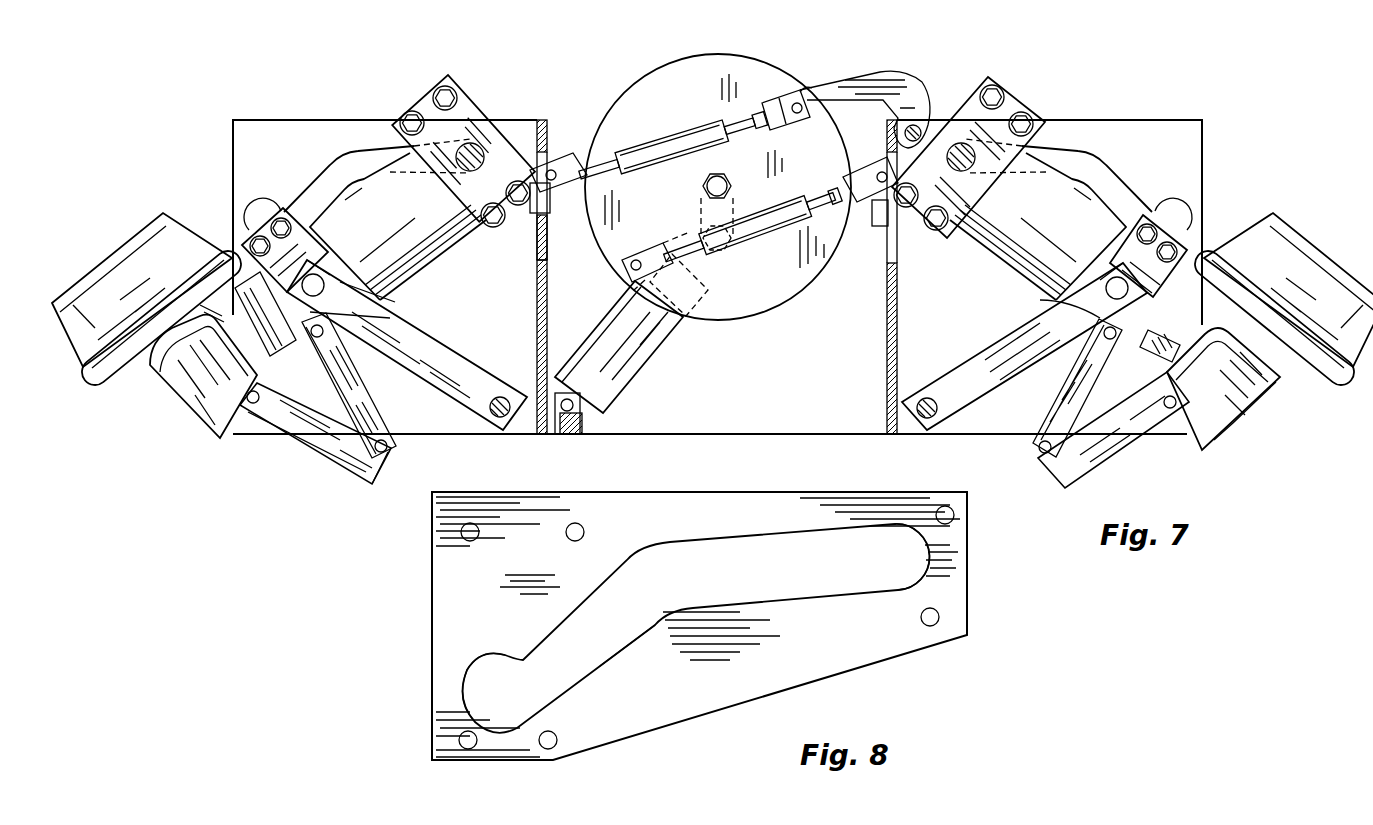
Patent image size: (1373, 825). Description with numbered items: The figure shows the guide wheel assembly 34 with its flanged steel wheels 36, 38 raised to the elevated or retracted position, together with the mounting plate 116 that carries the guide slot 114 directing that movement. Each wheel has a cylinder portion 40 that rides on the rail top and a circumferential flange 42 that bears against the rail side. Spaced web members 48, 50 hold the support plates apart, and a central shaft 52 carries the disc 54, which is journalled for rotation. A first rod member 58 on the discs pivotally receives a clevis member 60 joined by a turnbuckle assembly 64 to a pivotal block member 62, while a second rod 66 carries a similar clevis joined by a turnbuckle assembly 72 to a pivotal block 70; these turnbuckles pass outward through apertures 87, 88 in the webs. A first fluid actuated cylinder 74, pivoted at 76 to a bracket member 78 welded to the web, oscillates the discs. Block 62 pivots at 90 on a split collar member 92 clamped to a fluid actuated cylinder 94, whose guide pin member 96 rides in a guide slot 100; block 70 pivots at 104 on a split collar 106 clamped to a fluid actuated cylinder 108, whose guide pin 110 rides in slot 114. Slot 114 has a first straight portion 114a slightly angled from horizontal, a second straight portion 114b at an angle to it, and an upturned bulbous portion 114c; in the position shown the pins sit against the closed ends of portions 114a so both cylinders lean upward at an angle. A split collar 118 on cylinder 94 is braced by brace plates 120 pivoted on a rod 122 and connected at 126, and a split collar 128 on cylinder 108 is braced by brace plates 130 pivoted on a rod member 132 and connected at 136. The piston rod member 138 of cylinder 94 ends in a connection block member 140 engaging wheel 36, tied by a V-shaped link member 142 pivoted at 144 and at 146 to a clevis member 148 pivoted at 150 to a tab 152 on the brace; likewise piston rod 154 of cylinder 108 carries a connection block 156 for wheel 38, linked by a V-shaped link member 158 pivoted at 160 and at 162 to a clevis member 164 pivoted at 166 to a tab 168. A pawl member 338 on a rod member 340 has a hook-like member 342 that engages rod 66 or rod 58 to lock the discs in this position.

In FIG. 7, the guide wheel assembly 34 is at (1204, 118).
In FIG. 7, the flanged steel wheel 36 is at (1273, 262).
In FIG. 7, the flanged steel wheel 38 is at (146, 252).
In FIG. 7, the cylinder portion 40 is at (92, 328).
In FIG. 7, the circumferential flange 42 is at (97, 374).
In FIG. 7, the web member 48 is at (542, 326).
In FIG. 7, the web member 50 is at (887, 330).
In FIG. 7, the shaft 52 is at (702, 186).
In FIG. 7, the disc 54 is at (688, 84).
In FIG. 7, the first rod member 58 is at (614, 263).
In FIG. 7, the clevis member 60 is at (642, 283).
In FIG. 7, the pivotal block member 62 is at (860, 216).
In FIG. 7, the turnbuckle assembly 64 is at (753, 242).
In FIG. 7, the second rod 66 is at (797, 102).
In FIG. 7, the pivotal block 70 is at (563, 198).
In FIG. 7, the turnbuckle assembly 72 is at (658, 147).
In FIG. 7, the first fluid actuated cylinder 74 is at (606, 368).
In FIG. 7, the pivot 76 is at (565, 418).
In FIG. 7, the bracket member 78 is at (583, 432).
In FIG. 7, the aperture 87 is at (891, 262).
In FIG. 7, the aperture 88 is at (542, 262).
In FIG. 7, the pivot 90 is at (878, 172).
In FIG. 7, the split collar member 92 is at (960, 116).
In FIG. 7, the fluid actuated cylinder 94 is at (1077, 237).
In FIG. 7, the guide pin member 96 is at (968, 150).
In FIG. 7, the guide slot 100 is at (1080, 153).
In FIG. 7, the pivot 104 is at (560, 160).
In FIG. 7, the split collar 106 is at (448, 82).
In FIG. 7, the fluid actuated cylinder 108 is at (366, 215).
In FIG. 7, the guide pin 110 is at (475, 155).
In FIG. 7, the guide slot 114 is at (330, 165).
In FIG. 8, the guide slot 114 is at (840, 557).
In FIG. 8, the first straight portion 114a is at (815, 590).
In FIG. 8, the second straight portion 114b is at (613, 662).
In FIG. 8, the bulbous portion 114c is at (468, 687).
In FIG. 8, the plate 116 is at (680, 512).
In FIG. 7, the split collar 118 is at (1152, 262).
In FIG. 7, the brace plate 120 is at (958, 368).
In FIG. 7, the rod 122 is at (930, 400).
In FIG. 7, the pivot 126 is at (1122, 290).
In FIG. 7, the split collar 128 is at (249, 232).
In FIG. 7, the brace plate 130 is at (441, 388).
In FIG. 7, the rod member 132 is at (499, 418).
In FIG. 7, the pivot 136 is at (313, 272).
In FIG. 7, the piston rod member 138 is at (1180, 344).
In FIG. 7, the connection block member 140 is at (1204, 406).
In FIG. 7, the V-shaped link member 142 is at (1100, 456).
In FIG. 7, the pivot 144 is at (1176, 410).
In FIG. 7, the pivot 146 is at (1040, 449).
In FIG. 7, the clevis member 148 is at (1067, 390).
In FIG. 7, the pivot 150 is at (1106, 332).
In FIG. 7, the tab 152 is at (1097, 305).
In FIG. 7, the piston rod 154 is at (250, 336).
In FIG. 7, the connection block 156 is at (205, 382).
In FIG. 7, the V-shaped link member 158 is at (307, 434).
In FIG. 7, the pivot 160 is at (253, 404).
In FIG. 7, the pivot 162 is at (348, 470).
In FIG. 7, the clevis member 164 is at (356, 385).
In FIG. 7, the pivot 166 is at (386, 314).
In FIG. 7, the tab 168 is at (376, 300).
In FIG. 7, the pawl member 338 is at (878, 75).
In FIG. 7, the rod member 340 is at (918, 126).
In FIG. 7, the hook-like member 342 is at (806, 90).